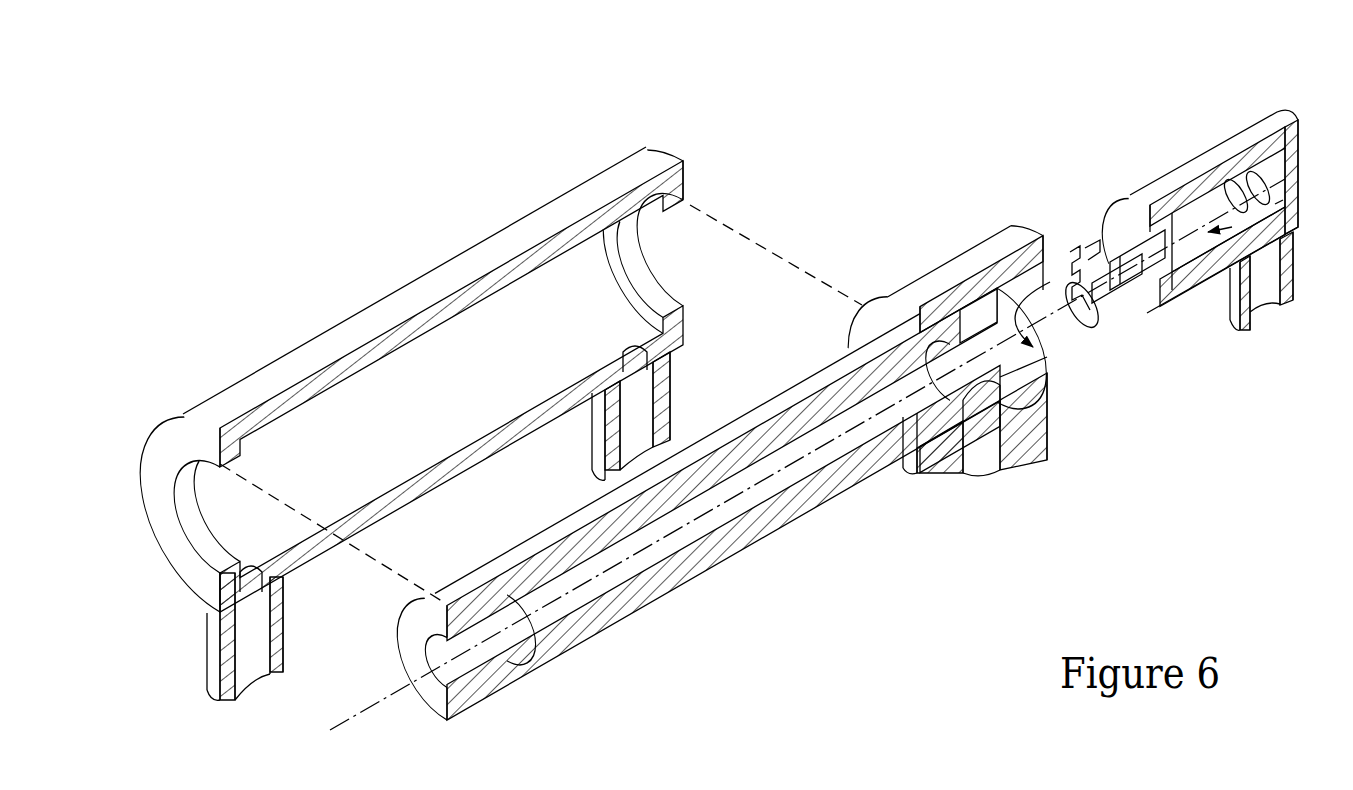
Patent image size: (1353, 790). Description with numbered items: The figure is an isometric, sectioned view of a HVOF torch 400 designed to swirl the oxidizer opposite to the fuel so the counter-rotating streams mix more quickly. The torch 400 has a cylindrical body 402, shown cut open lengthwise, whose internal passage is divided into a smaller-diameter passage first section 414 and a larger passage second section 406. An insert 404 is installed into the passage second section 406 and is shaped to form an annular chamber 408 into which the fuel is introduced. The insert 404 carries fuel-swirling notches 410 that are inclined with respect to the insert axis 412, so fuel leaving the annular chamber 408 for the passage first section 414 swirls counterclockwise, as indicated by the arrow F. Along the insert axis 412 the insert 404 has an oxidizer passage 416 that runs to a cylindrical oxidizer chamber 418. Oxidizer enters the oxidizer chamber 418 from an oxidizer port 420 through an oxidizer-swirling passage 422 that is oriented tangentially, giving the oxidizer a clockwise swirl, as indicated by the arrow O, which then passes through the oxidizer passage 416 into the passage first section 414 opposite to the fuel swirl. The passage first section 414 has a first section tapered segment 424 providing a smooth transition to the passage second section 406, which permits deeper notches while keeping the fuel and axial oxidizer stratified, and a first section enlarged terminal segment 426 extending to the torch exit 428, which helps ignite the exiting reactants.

The HVOF torch 400 is at (380, 140).
The cylindrical body 402 is at (865, 275).
The insert 404 is at (1130, 150).
The passage second section 406 is at (1020, 375).
The annular chamber 408 is at (978, 313).
The fuel-swirling notches 410 is at (1097, 303).
The insert axis 412 is at (1145, 255).
The passage first section 414 is at (745, 507).
The oxidizer passage 416 is at (1128, 275).
The oxidizer chamber 418 is at (1203, 250).
The oxidizer port 420 is at (1262, 297).
The oxidizer-swirling passage 422 is at (1243, 195).
The first section tapered segment 424 is at (905, 415).
The first section enlarged terminal segment 426 is at (488, 655).
The torch exit 428 is at (430, 655).
The arrow indicating oxidizer swirl direction O is at (1283, 200).
The arrow indicating fuel swirl direction F is at (1088, 330).